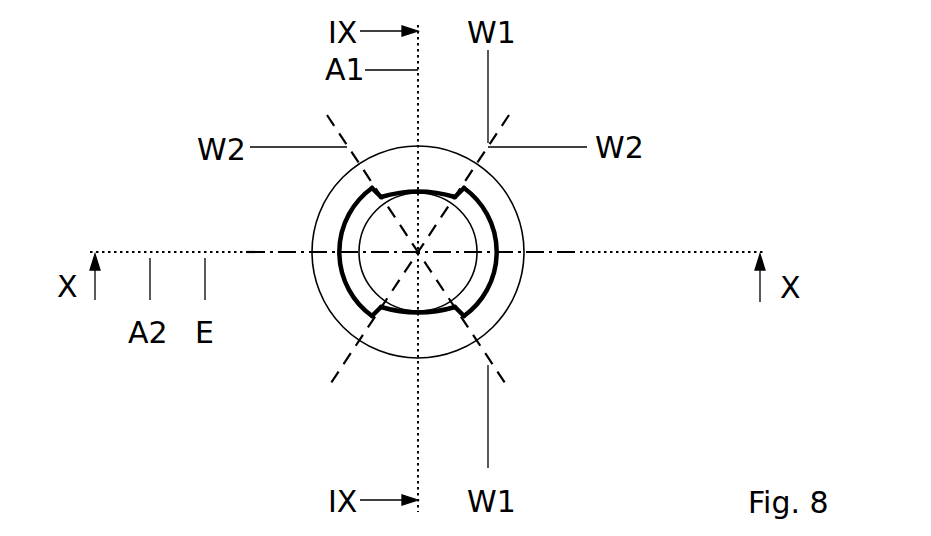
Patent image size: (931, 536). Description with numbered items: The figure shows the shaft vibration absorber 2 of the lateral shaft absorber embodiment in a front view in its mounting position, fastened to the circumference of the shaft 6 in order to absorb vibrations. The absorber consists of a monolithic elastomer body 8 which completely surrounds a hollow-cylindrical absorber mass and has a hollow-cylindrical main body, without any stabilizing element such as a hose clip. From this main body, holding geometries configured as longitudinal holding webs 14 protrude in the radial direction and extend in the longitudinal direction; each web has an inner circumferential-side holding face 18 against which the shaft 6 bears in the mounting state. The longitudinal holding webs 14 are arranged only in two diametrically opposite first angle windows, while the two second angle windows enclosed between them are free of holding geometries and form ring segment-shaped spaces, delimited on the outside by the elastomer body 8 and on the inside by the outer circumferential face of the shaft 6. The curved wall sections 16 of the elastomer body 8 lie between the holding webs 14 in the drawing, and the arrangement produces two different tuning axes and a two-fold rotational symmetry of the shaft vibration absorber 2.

The shaft vibration absorber 2 is at (372, 252).
The shaft 6 is at (360, 230).
The elastomer body 8 is at (523, 228).
The longitudinal holding webs 14 is at (432, 193).
The curved wall section 16 is at (483, 225).
The holding face 18 is at (399, 213).